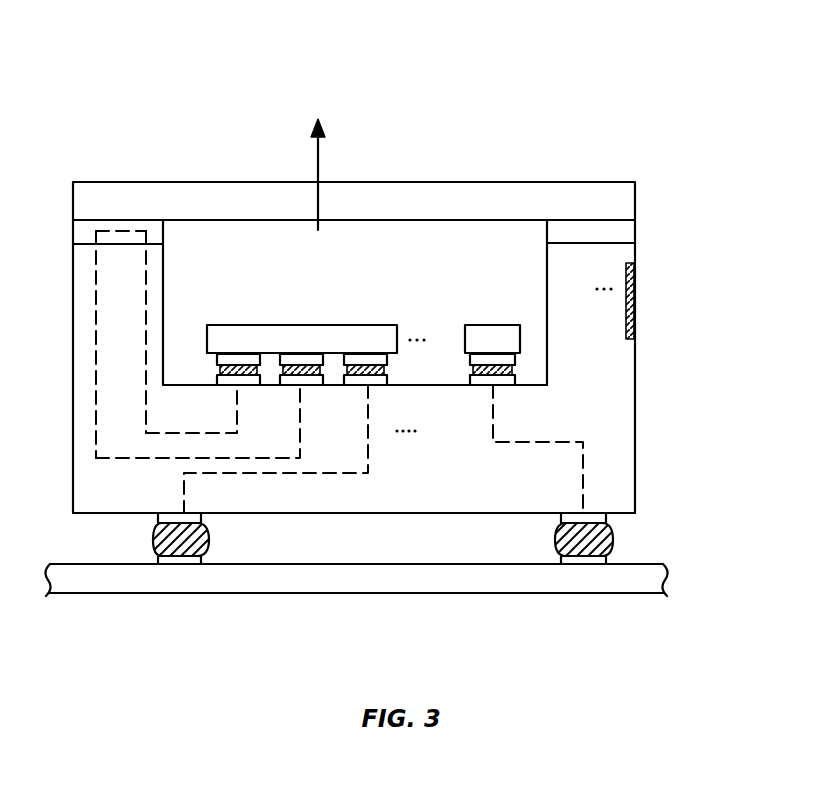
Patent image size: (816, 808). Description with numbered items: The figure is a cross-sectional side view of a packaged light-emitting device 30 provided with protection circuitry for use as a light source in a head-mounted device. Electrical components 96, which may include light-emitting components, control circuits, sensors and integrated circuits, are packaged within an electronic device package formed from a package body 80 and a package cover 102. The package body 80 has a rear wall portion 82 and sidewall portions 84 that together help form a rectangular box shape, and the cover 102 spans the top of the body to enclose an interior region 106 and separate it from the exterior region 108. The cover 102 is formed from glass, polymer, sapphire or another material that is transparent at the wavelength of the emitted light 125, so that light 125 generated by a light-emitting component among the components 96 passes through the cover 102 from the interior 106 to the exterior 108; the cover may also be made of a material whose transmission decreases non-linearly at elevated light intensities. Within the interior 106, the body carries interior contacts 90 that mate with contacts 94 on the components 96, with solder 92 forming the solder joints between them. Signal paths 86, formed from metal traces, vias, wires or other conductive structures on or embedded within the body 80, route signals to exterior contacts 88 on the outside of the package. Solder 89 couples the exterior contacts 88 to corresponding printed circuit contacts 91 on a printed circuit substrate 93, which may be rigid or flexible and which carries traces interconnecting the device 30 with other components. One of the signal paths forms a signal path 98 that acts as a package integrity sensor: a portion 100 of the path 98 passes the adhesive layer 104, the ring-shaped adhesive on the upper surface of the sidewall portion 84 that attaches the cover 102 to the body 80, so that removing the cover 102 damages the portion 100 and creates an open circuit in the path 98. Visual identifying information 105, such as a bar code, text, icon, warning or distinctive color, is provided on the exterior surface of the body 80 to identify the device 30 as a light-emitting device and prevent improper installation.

The light-emitting device 30 is at (723, 181).
The package body 80 is at (623, 487).
The rear wall portion 82 is at (62, 393).
The sidewall portions 84 is at (62, 245).
The signal paths 86 is at (370, 470).
The exterior contacts 88 is at (202, 516).
The solder 89 is at (152, 543).
The interior contacts 90 is at (470, 380).
The printed circuit contacts 91 is at (202, 562).
The solder 92 is at (470, 366).
The printed circuit substrate 93 is at (419, 583).
The contacts 94 is at (372, 360).
The electrical components 96 is at (233, 333).
The signal path 98 is at (147, 289).
The portion 100 is at (107, 229).
The package cover 102 is at (195, 193).
The adhesive layer 104 is at (78, 231).
The visual identifying information 105 is at (633, 309).
The interior region 106 is at (396, 237).
The exterior region 108 is at (412, 60).
The emitted light 125 is at (318, 151).